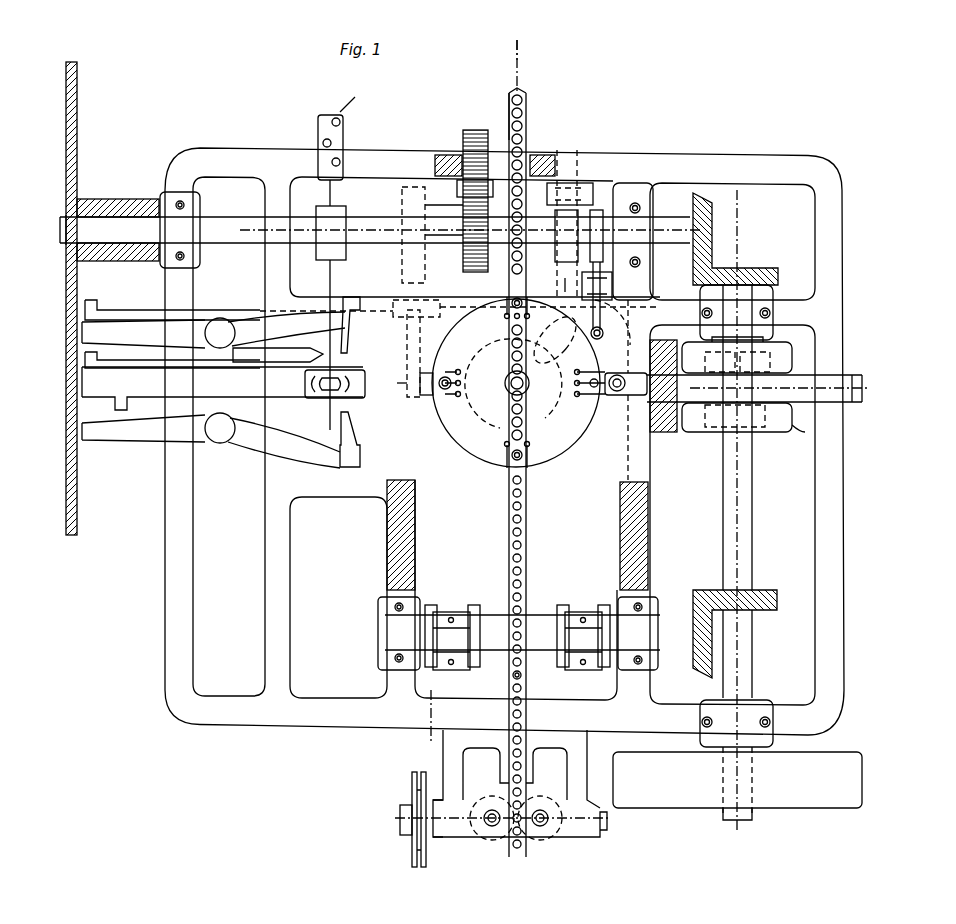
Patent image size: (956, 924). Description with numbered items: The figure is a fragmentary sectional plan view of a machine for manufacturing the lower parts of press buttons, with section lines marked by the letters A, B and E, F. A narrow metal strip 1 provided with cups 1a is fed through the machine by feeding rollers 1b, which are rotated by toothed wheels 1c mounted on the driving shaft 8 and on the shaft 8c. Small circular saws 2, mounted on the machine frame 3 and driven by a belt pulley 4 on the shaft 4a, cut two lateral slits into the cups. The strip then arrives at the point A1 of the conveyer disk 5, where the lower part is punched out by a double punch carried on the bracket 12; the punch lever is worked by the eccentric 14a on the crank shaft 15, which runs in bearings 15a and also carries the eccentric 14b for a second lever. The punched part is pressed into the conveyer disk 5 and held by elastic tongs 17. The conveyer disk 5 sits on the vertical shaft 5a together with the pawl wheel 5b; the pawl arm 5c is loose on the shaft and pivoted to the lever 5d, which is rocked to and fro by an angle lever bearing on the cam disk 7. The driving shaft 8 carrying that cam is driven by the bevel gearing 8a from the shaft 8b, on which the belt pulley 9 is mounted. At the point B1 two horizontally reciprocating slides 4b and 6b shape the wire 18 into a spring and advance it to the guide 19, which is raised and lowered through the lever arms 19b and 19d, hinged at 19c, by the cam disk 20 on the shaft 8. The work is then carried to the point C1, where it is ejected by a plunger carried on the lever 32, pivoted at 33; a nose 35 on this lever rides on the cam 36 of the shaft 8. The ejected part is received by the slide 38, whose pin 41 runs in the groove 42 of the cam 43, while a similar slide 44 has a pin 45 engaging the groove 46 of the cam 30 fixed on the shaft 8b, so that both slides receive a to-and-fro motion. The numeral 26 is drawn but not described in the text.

The narrow metal strip 1 is at (530, 692).
The cups 1a is at (528, 672).
The feeding rollers 1b is at (528, 142).
The toothed wheels 1c is at (463, 215).
The small circular saws 2 is at (490, 842).
The machine frame 3 is at (237, 722).
The belt pulley 4 is at (412, 853).
The shaft 4a is at (400, 823).
The slide 4b is at (221, 382).
The conveyer disk 5 is at (553, 462).
The vertical shaft 5a is at (527, 376).
The pawl wheel 5b is at (548, 405).
The pawl arm 5c is at (492, 380).
The lever 5d is at (563, 285).
The slide 6b is at (365, 383).
The cam disk 7 is at (555, 240).
The driving shaft 8 is at (238, 248).
The bevel gearing 8a is at (712, 240).
The shaft 8b is at (755, 645).
The shaft 8c is at (435, 166).
The belt pulley 9 is at (820, 808).
The bracket 12 is at (415, 535).
The eccentric 14a is at (583, 637).
The eccentric 14b is at (452, 637).
The crank shaft 15 is at (522, 632).
The bearings 15a is at (378, 632).
The tongs 17 is at (507, 300).
The wire 18 is at (332, 410).
The guide 19 is at (425, 396).
The arm of double-armed lever 19b is at (450, 312).
The hinge of double-armed lever 19c is at (463, 262).
The arm of double-armed lever 19d is at (402, 275).
The cam disk 20 is at (402, 192).
The frame bar 26 is at (668, 432).
The cam disk 30 is at (780, 352).
The lever 32 is at (603, 318).
The pivot 33 is at (612, 288).
The projection or nose 35 is at (603, 250).
The cam 36 is at (608, 206).
The slide 38 is at (617, 372).
The pin or pivot 41 is at (710, 430).
The groove 42 is at (775, 432).
The cam 43 is at (797, 440).
The slide 44 is at (640, 420).
The pin or pivot 45 is at (712, 358).
The groove 46 is at (764, 360).
The section line A—B A is at (527, 49).
The point A' A1 is at (506, 468).
The section line A— B is at (506, 763).
The point B' B1 is at (447, 405).
The point C' C1 is at (614, 370).
The section line E—F E is at (406, 393).
The section line E— F is at (857, 390).